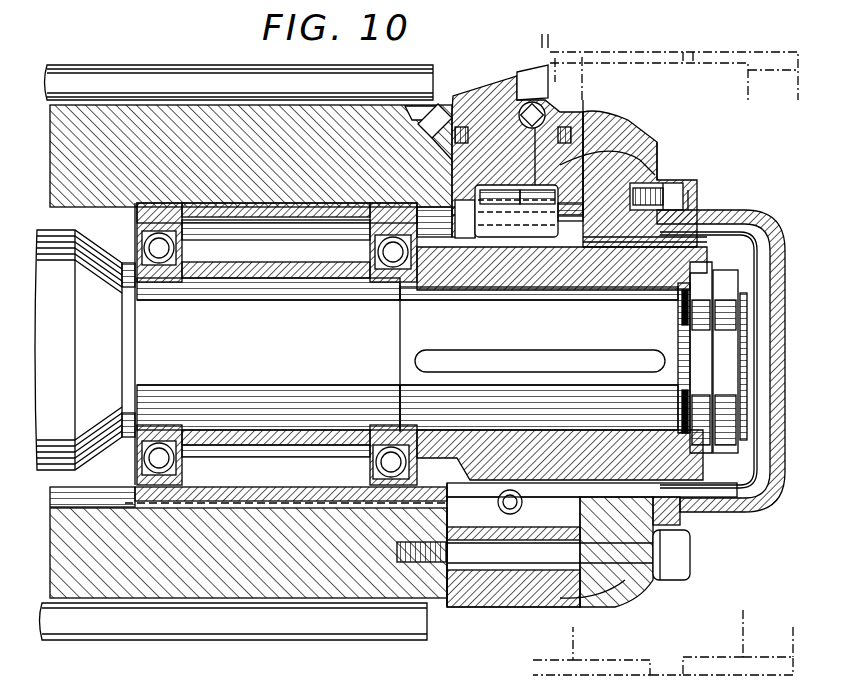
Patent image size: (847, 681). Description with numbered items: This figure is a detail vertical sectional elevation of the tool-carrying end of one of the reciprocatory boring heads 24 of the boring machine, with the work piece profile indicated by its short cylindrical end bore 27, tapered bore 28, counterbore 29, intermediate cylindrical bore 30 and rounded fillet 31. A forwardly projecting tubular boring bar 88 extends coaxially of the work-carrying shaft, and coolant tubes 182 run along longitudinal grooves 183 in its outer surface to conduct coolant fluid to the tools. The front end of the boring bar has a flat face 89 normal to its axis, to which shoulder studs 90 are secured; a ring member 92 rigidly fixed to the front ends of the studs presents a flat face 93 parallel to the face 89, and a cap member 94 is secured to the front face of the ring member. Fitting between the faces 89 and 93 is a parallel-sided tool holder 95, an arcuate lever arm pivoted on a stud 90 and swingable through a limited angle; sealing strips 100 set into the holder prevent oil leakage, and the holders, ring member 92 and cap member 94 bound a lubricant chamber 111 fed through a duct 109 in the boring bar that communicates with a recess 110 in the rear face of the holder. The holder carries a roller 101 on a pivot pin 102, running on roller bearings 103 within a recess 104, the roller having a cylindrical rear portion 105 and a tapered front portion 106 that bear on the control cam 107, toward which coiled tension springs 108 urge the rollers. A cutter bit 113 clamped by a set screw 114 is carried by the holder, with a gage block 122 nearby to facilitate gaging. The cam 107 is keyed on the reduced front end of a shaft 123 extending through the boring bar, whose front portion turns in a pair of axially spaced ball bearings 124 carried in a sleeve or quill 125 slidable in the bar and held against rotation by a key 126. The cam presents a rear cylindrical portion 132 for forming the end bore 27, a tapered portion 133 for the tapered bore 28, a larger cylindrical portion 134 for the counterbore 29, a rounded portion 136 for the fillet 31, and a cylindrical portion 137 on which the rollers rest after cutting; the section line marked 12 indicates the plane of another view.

The reciprocatory boring head 24 is at (94, 46).
The tubular boring bar 88 is at (136, 118).
The tube 182 is at (178, 75).
The longitudinal groove 183 is at (220, 105).
The duct 109 is at (443, 110).
The recess 110 is at (462, 125).
The cutter bit 113 is at (532, 78).
The roller bearings 103 is at (500, 190).
The section line 12 is at (532, 342).
The set screw 114 is at (575, 105).
The gage block 122 is at (605, 110).
The sealing strips 100 is at (598, 130).
The ring member 92 is at (648, 135).
The recess 104 is at (660, 142).
The tool holder 95 is at (660, 160).
The pivot pin 102 is at (446, 230).
The rear cylindrical portion 132 is at (470, 262).
The cylindrical rear portion 105 is at (482, 255).
The roller 101 is at (508, 255).
The tapered front portion 106 is at (538, 255).
The tapered portion 133 is at (560, 250).
The cylindrical portion 134 is at (600, 250).
The rounded portion 136 is at (630, 250).
The cylindrical portion 137 is at (660, 250).
The shaft 123 is at (296, 344).
The ball bearings 124 is at (166, 450).
The sleeve or quill 125 is at (226, 450).
The key 126 is at (298, 450).
The coiled tension springs 108 is at (522, 504).
The flat face 89 is at (444, 605).
The shoulder studs 90 is at (486, 602).
The control cam 107 is at (688, 512).
The lubricant chamber 111 is at (678, 517).
The flat face 93 is at (598, 598).
The cap member 94 is at (748, 500).
The cylindrical end bore 27 is at (540, 655).
The tapered bore 28 is at (565, 665).
The counterbores 29 is at (650, 668).
The intermediate cylindrical bore 30 is at (770, 655).
The rounded fillets 31 is at (740, 658).